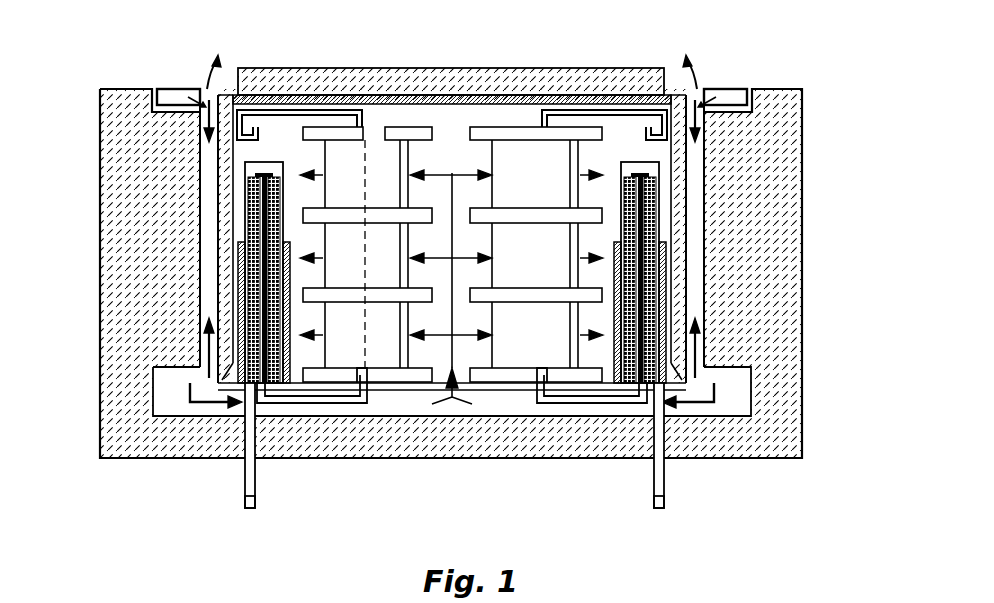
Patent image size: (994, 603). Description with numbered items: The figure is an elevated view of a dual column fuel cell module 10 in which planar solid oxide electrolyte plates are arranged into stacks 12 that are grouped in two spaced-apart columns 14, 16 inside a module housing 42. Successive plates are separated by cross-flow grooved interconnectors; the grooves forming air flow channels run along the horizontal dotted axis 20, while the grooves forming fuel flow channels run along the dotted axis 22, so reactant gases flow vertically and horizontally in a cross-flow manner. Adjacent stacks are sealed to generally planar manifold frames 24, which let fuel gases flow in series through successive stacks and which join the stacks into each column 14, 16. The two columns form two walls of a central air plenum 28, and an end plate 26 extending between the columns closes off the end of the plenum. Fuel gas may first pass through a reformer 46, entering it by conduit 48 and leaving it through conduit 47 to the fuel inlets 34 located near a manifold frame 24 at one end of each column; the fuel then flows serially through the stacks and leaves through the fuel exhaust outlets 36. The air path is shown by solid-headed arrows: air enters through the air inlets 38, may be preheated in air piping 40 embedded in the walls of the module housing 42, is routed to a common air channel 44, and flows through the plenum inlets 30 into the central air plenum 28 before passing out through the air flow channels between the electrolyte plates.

The dual column fuel cell module 10 is at (814, 88).
The stacks 12 is at (303, 134).
The column 14 is at (380, 263).
The column 16 is at (550, 263).
The air flow channel axis 20 is at (422, 100).
The fuel flow channel axis 22 is at (370, 128).
The manifold frames 24 is at (240, 300).
The end plate 26 is at (466, 70).
The central air plenum 28 is at (465, 169).
The plenum inlets 30 is at (448, 404).
The fuel inlets 34 is at (315, 404).
The fuel exhaust outlets 36 is at (337, 106).
The air inlets 38 is at (172, 88).
The air piping 40 is at (209, 186).
The module housing 42 is at (100, 388).
The common air channel 44 is at (242, 438).
The reformer 46 is at (250, 200).
The conduit 47 is at (334, 366).
The conduit 48 is at (246, 500).